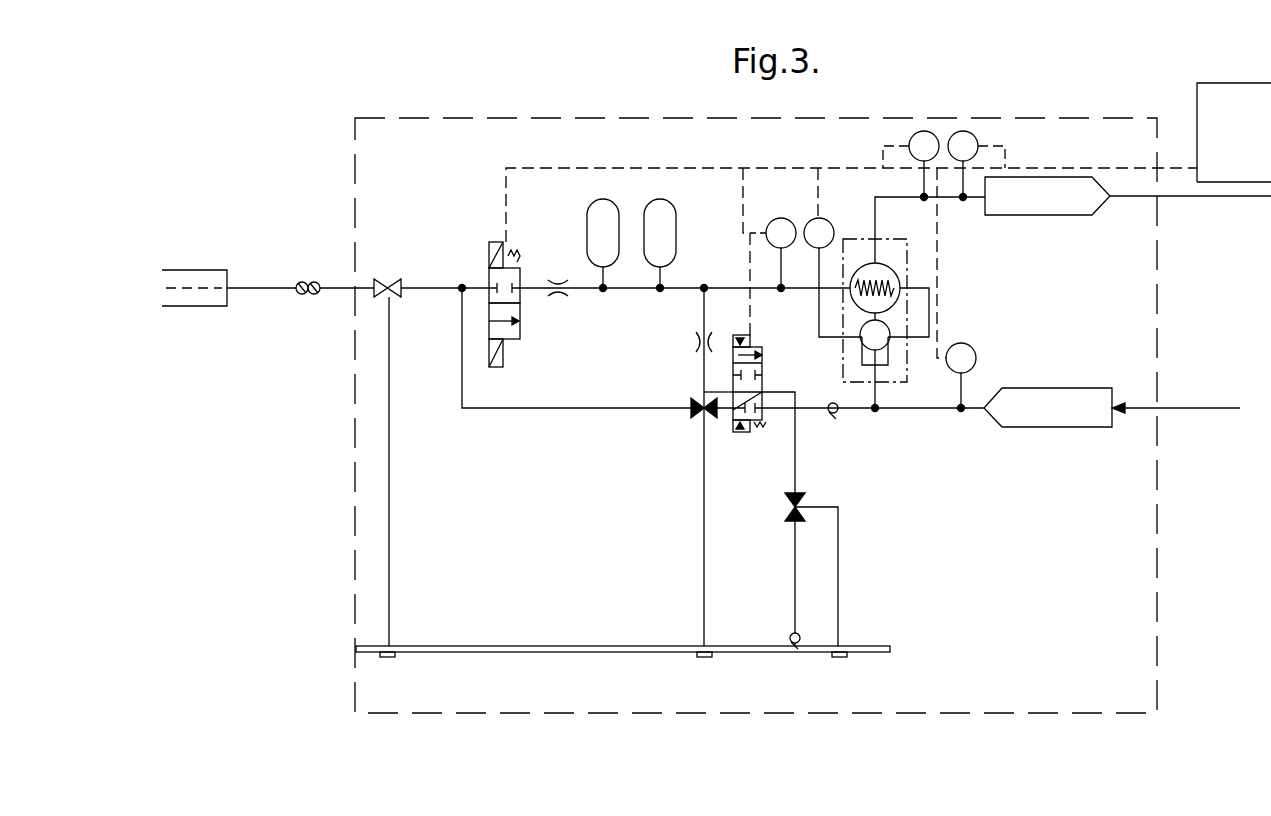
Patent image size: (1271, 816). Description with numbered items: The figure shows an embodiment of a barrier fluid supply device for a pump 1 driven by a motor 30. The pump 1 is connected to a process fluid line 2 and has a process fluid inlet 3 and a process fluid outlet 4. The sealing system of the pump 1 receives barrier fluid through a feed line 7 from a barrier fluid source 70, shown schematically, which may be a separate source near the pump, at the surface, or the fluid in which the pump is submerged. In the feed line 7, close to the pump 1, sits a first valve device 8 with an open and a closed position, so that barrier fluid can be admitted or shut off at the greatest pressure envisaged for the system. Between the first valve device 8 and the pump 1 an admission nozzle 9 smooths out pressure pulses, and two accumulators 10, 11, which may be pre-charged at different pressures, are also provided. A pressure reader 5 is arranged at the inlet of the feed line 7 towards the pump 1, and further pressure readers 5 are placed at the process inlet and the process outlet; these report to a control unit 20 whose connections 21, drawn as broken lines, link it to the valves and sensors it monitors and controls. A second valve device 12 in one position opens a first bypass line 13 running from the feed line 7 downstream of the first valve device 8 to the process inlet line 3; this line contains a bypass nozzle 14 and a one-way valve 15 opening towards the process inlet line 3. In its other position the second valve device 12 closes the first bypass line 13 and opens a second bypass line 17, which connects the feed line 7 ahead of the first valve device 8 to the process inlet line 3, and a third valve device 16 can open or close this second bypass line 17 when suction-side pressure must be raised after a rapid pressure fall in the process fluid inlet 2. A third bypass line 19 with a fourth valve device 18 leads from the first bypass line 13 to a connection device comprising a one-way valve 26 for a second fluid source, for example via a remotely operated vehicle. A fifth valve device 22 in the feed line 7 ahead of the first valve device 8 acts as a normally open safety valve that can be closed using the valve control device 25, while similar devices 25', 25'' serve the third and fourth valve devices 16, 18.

The pump 1 is at (870, 265).
The process fluid line 2 is at (880, 370).
The process fluid inlet 3 is at (1067, 422).
The process fluid outlet 4 is at (1067, 185).
The pressure reader 5 is at (781, 218).
The feed line 7 is at (418, 285).
The first valve device 8 is at (489, 278).
The admission nozzle 9 is at (558, 294).
The accumulator 10 is at (598, 212).
The accumulator 11 is at (665, 212).
The second valve device 12 is at (748, 432).
The first bypass line 13 is at (703, 378).
The bypass nozzle 14 is at (696, 342).
The one-way valve 15 is at (835, 414).
The third valve device 16 is at (688, 415).
The second bypass line 17 is at (481, 410).
The fourth valve device 18 is at (805, 515).
The third bypass line 19 is at (797, 578).
The control unit 20 is at (1256, 148).
The connections 21 is at (712, 168).
The fifth valve device 22 is at (383, 279).
The valve control device 25 is at (379, 707).
The valve control device 25' is at (713, 715).
The valve control device 25'' is at (854, 702).
The one-way valve 26 is at (800, 632).
The motor 30 is at (883, 330).
The barrier fluid source 70 is at (190, 300).